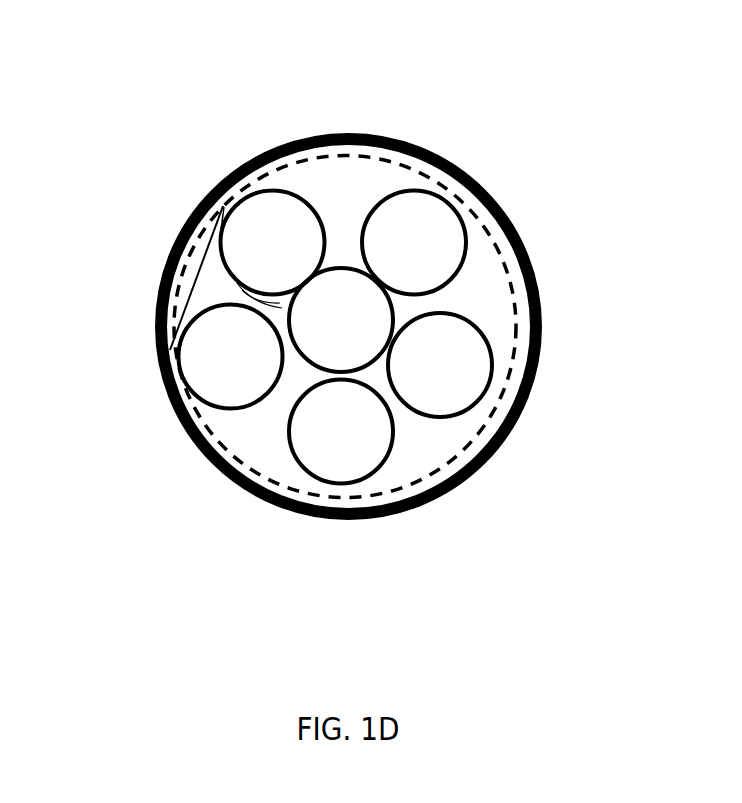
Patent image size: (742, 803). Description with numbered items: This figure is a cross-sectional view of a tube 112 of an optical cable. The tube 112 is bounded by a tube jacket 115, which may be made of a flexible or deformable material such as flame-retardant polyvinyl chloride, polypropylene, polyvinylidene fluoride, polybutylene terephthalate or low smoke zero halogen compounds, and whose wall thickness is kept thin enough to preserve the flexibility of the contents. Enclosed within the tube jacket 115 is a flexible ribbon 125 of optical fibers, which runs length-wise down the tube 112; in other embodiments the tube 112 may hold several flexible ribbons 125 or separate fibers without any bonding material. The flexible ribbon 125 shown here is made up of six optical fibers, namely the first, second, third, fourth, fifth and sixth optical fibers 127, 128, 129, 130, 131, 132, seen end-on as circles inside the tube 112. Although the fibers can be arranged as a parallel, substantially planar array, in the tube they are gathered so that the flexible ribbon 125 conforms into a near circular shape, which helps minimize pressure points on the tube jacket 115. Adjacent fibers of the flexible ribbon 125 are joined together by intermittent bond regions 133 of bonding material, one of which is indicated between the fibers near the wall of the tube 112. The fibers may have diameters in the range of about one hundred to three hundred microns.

The tube 112 is at (160, 186).
The tube jacket 115 is at (542, 338).
The flexible ribbon 125 is at (488, 430).
The first optical fiber 127 is at (252, 371).
The second optical fiber 128 is at (294, 257).
The third optical fiber 129 is at (393, 257).
The fourth optical fiber 130 is at (419, 380).
The fifth optical fiber 131 is at (320, 446).
The sixth optical fiber 132 is at (320, 335).
The intermittent bond region 133 is at (210, 287).